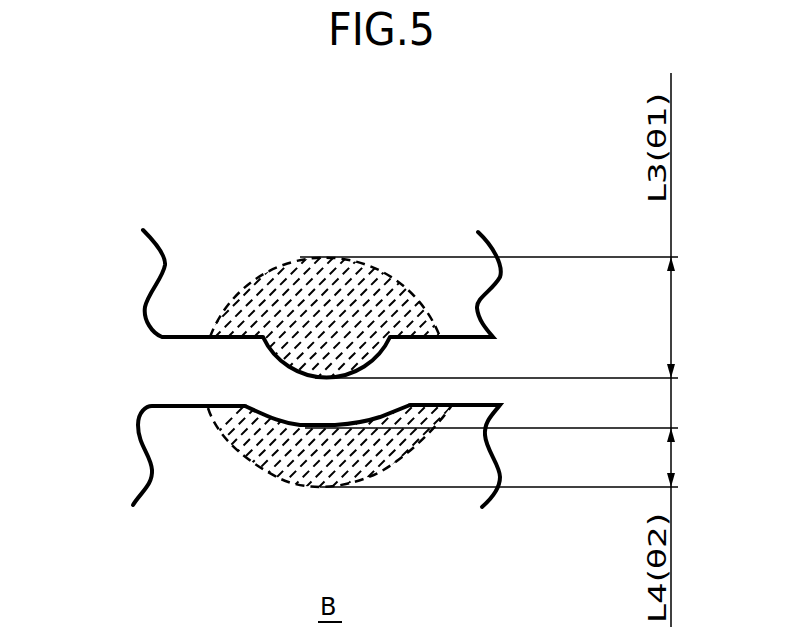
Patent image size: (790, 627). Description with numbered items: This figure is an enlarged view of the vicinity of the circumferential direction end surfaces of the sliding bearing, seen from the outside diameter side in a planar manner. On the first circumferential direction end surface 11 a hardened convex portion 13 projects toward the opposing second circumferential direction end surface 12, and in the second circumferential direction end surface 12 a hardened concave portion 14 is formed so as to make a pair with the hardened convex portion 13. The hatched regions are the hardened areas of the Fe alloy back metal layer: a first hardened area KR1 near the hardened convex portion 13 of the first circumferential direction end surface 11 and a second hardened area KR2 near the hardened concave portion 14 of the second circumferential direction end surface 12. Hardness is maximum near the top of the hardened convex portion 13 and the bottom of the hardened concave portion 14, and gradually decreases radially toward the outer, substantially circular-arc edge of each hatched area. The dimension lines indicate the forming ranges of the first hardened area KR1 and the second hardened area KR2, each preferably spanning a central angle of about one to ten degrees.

The first circumferential direction end surface 11 is at (181, 341).
The second circumferential direction end surface 12 is at (182, 406).
The hardened convex portion 13 is at (315, 365).
The hardened concave portion 14 is at (287, 423).
The first hardened area KR1 is at (325, 258).
The second hardened area KR2 is at (325, 487).